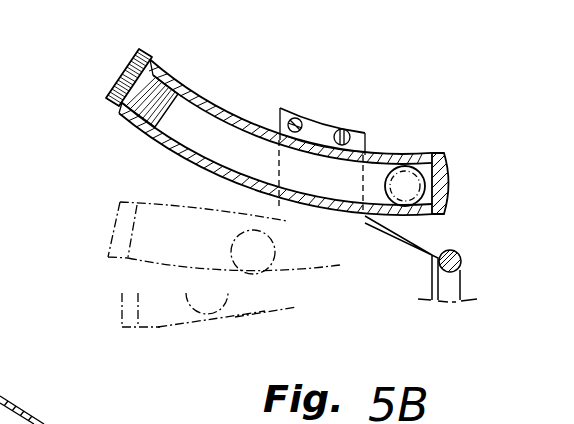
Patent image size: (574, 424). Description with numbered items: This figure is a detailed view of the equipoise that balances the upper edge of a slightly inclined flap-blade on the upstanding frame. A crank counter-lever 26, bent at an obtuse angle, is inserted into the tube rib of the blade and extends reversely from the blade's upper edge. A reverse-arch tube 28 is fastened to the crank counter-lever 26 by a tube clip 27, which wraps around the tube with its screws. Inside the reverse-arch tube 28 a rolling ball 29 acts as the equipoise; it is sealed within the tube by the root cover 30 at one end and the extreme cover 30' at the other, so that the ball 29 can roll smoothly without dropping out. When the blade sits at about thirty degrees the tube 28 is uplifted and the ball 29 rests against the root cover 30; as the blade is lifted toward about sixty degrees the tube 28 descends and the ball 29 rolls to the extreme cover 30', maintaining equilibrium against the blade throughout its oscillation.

The crank counter-lever 26 is at (391, 226).
The tube clip 27 is at (330, 122).
The reverse-arch tube 28 is at (192, 86).
The rolling ball 29 is at (406, 180).
The root cover 30 is at (469, 190).
The extreme cover 30' is at (103, 114).